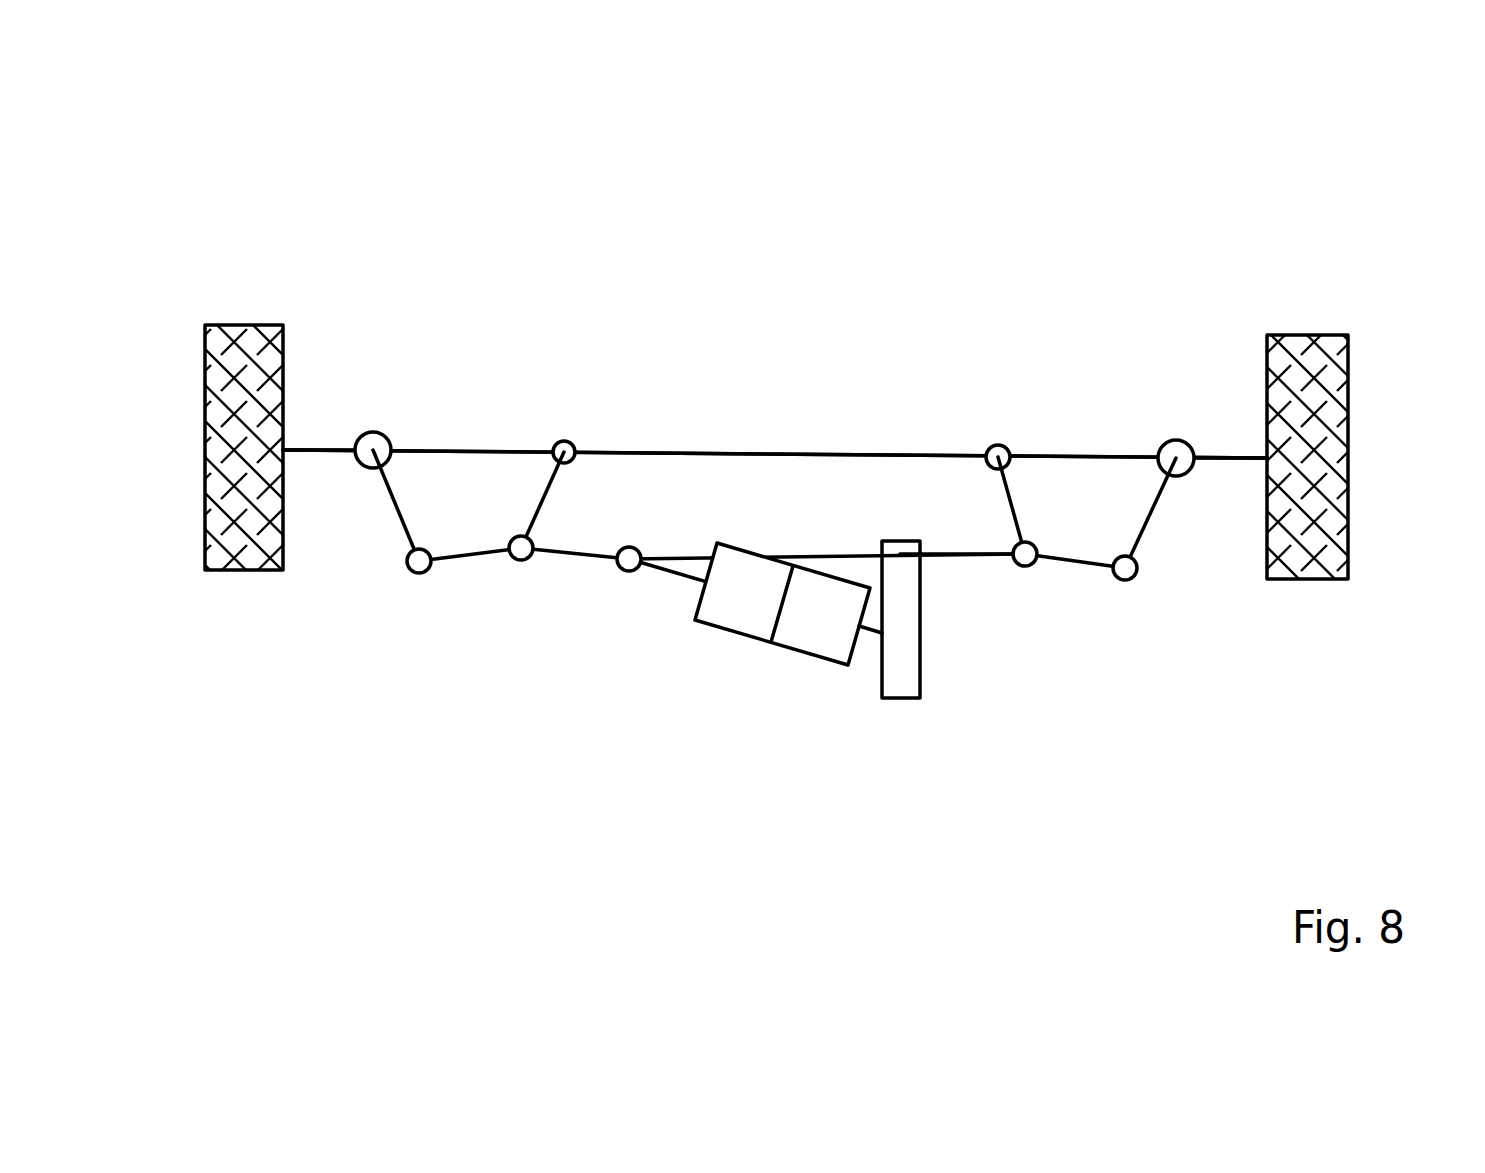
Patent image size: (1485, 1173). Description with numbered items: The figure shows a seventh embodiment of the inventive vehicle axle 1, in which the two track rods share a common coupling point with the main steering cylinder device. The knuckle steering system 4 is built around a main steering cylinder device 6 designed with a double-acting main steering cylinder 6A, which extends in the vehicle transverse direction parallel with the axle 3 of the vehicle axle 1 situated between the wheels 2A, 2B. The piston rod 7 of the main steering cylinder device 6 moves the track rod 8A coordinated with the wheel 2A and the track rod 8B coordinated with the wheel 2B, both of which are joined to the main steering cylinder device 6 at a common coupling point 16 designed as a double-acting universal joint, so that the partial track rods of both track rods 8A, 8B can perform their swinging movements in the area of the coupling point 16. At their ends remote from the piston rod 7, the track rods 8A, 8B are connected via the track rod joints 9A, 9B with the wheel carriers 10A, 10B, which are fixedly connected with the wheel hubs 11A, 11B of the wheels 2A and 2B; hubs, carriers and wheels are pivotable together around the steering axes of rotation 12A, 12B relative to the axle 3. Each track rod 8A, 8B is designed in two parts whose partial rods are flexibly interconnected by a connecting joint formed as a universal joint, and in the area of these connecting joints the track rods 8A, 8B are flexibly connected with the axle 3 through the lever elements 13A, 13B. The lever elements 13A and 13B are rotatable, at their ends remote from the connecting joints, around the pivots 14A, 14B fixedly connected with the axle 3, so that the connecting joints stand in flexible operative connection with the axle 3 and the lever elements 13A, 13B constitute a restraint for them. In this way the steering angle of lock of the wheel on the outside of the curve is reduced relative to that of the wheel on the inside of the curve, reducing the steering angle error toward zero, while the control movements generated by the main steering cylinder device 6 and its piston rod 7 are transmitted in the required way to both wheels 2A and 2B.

The vehicle axle 1 is at (721, 273).
The wheel 2A is at (243, 423).
The wheel 2B is at (1317, 453).
The axle 3 is at (893, 455).
The wheel hub 11A is at (285, 450).
The wheel hub 11B is at (1217, 450).
The steering axis of rotation 12A is at (370, 442).
The steering axis of rotation 12B is at (1170, 446).
The pivot 14A is at (570, 443).
The pivot 14B is at (1018, 541).
The wheel carrier 10A is at (390, 513).
The wheel carrier 10B is at (1148, 530).
The track rod joint 9A is at (407, 565).
The track rod joint 9B is at (1137, 573).
The track rod 8A is at (591, 536).
The track rod 8B is at (1014, 483).
The lever element 13A is at (541, 505).
The lever element 13B is at (1012, 512).
The common coupling point 16 is at (620, 569).
The piston rod 7 is at (680, 575).
The main steering cylinder device 6 is at (813, 687).
The main steering cylinder 6A is at (752, 617).
The knuckle steering system 4 is at (623, 627).